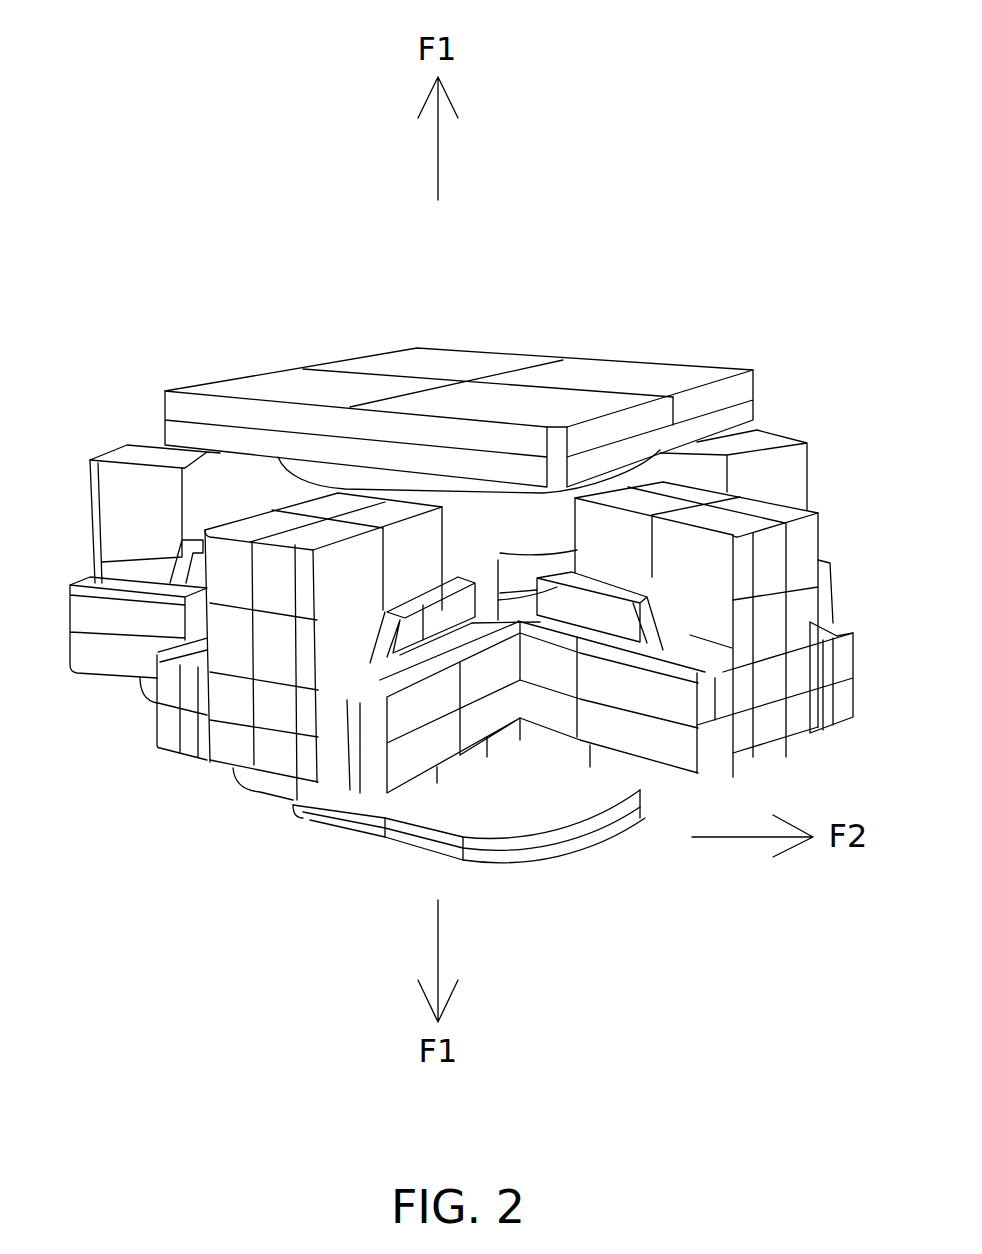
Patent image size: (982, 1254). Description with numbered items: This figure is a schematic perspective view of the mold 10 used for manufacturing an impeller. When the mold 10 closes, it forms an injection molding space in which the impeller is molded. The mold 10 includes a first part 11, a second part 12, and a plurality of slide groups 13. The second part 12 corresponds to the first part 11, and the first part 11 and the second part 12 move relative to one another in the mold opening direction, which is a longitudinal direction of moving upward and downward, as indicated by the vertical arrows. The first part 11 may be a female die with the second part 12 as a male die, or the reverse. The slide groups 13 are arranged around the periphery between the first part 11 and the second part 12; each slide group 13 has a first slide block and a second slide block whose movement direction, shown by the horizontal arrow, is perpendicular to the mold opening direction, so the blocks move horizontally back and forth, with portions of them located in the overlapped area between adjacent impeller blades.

The mold 10 is at (718, 208).
The first part 11 is at (650, 380).
The second part 12 is at (542, 805).
The slide groups 13 is at (137, 458).